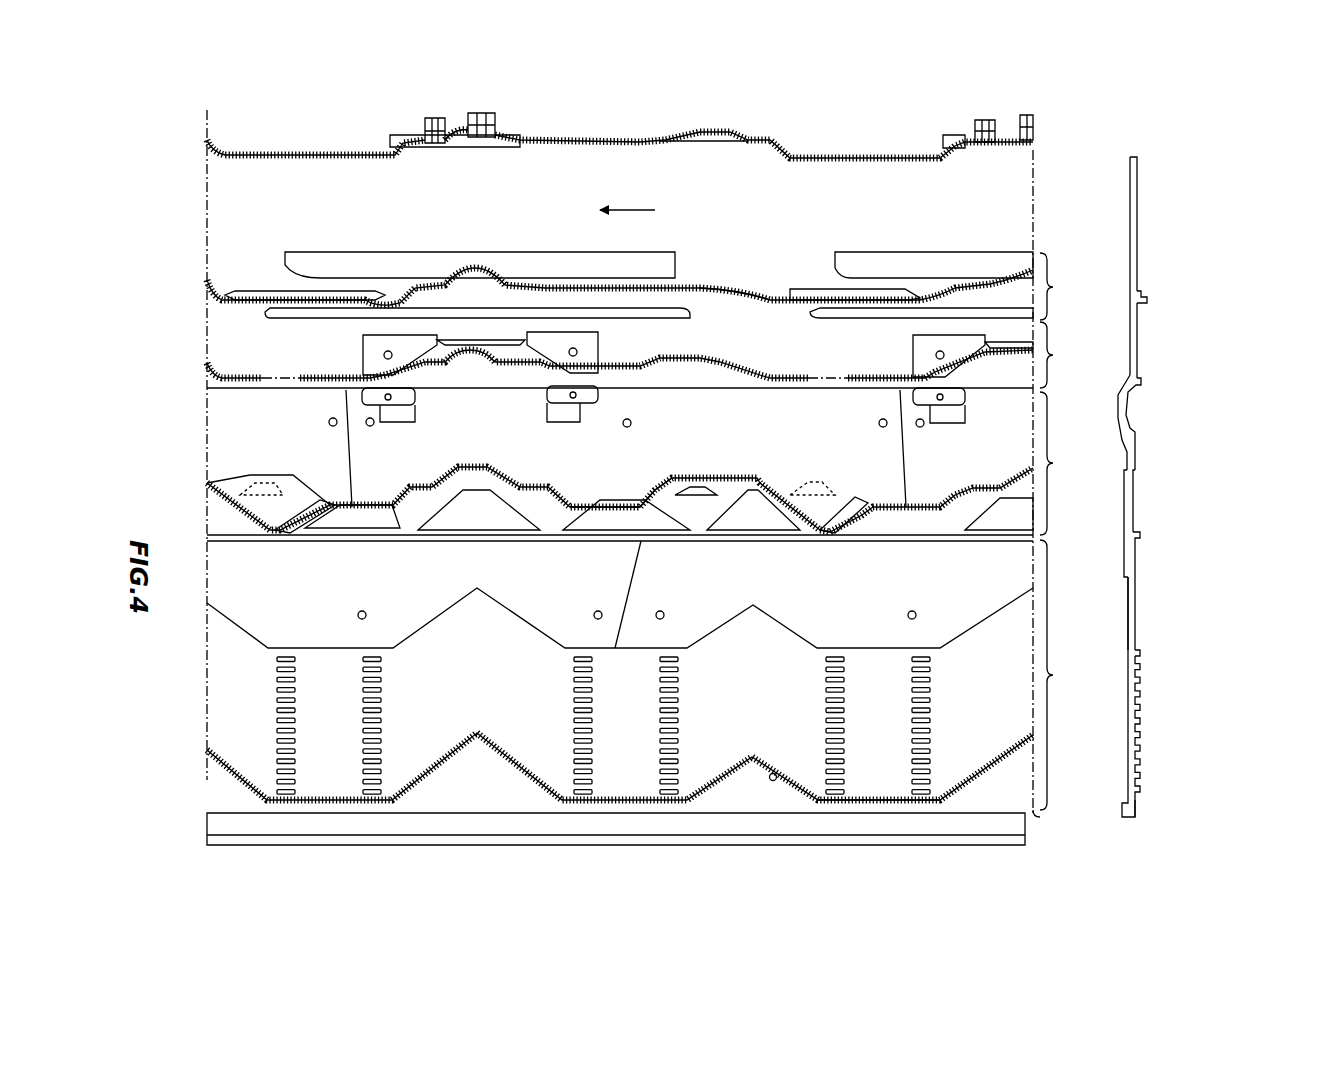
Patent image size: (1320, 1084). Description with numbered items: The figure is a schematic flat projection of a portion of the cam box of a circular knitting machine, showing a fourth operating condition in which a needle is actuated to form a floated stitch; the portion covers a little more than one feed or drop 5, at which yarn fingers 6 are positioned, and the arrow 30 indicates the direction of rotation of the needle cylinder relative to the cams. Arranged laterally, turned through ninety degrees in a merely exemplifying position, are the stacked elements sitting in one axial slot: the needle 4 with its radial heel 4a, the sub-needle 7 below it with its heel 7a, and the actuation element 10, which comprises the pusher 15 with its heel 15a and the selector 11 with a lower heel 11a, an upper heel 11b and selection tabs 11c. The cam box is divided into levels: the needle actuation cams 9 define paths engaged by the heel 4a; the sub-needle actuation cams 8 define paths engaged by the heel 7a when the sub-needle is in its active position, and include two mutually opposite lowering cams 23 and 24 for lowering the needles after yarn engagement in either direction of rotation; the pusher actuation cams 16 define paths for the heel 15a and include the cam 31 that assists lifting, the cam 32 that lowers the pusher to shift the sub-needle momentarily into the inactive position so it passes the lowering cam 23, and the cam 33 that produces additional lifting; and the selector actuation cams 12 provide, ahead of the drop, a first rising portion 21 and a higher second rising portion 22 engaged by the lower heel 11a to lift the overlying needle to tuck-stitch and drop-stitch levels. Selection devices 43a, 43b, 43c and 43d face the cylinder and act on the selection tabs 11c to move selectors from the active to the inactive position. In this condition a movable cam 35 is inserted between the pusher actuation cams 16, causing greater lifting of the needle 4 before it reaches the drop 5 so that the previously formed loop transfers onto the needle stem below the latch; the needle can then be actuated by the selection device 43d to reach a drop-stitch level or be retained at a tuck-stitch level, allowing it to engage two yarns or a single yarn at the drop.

The needle 4 is at (1137, 217).
The heel 4a is at (748, 288).
The feed or drop 5 is at (456, 122).
The yarn fingers 6 is at (433, 118).
The sub-needle 7 is at (1137, 340).
The heel 7a is at (1205, 383).
The sub-needle actuation cams 8 is at (1053, 355).
The needle actuation cams 9 is at (1053, 287).
The actuation element 10 is at (1158, 573).
The selector 11 is at (1128, 626).
The lower heel 11a is at (880, 790).
The upper heel 11b is at (1140, 652).
The selection tabs 11c is at (1140, 711).
The selector actuation cams 12 is at (1053, 675).
The pusher 15 is at (1133, 508).
The heel 15a is at (733, 483).
The pusher actuation cams 16 is at (1053, 463).
The first rising portion 21 is at (773, 773).
The second rising portion 22 is at (533, 770).
The lowering cam 23 is at (592, 342).
The lowering cam 24 is at (373, 349).
The arrow 30 is at (635, 208).
The cam 31 is at (763, 517).
The cam 32 is at (635, 503).
The cam 33 is at (570, 520).
The movable cam 35 is at (698, 490).
The selection device 43a is at (390, 725).
The selection device 43b is at (305, 732).
The selection device 43c is at (688, 725).
The selection device 43d is at (603, 727).